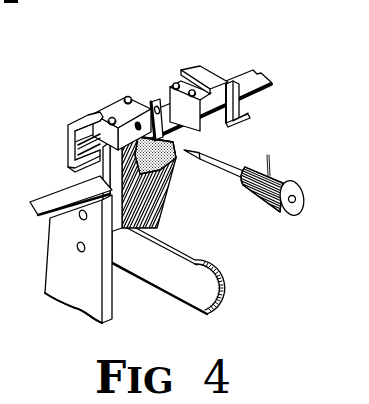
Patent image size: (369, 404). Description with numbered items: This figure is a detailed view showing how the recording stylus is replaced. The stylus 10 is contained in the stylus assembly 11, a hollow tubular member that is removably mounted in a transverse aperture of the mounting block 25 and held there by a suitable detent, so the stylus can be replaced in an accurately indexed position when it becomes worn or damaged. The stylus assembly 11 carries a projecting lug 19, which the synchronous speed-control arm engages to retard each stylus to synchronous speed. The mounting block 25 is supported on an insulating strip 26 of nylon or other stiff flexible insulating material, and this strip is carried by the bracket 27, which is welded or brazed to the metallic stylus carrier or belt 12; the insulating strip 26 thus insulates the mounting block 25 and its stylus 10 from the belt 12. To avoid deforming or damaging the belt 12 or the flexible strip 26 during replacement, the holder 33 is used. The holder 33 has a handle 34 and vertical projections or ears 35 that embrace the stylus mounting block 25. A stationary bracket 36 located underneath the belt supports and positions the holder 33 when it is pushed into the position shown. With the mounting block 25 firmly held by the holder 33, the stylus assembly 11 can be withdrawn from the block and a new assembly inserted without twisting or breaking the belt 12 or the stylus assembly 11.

The stylus 10 is at (184, 157).
The stylus assembly 11 is at (234, 158).
The stylus carrier or belt 12 is at (250, 78).
The projecting lug 19 is at (248, 118).
The mounting block 25 is at (115, 108).
The insulating strip 26 is at (159, 106).
The bracket 27 is at (225, 83).
The holder 33 is at (160, 219).
The handle 34 is at (182, 290).
The vertical projections or ears 35 is at (85, 115).
The stationary bracket 36 is at (62, 258).